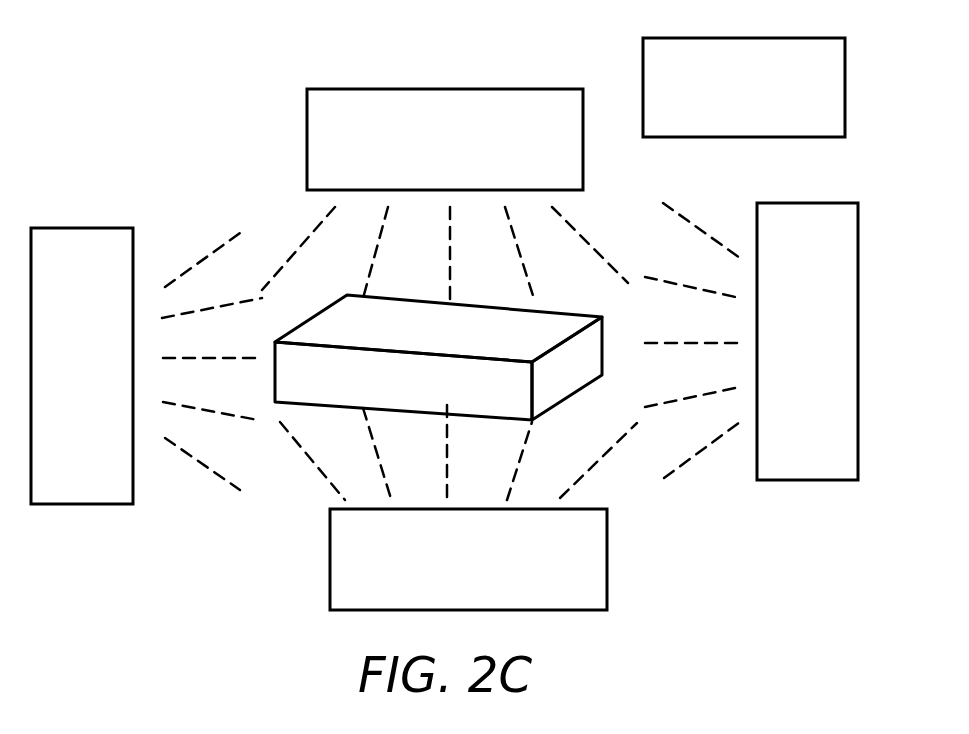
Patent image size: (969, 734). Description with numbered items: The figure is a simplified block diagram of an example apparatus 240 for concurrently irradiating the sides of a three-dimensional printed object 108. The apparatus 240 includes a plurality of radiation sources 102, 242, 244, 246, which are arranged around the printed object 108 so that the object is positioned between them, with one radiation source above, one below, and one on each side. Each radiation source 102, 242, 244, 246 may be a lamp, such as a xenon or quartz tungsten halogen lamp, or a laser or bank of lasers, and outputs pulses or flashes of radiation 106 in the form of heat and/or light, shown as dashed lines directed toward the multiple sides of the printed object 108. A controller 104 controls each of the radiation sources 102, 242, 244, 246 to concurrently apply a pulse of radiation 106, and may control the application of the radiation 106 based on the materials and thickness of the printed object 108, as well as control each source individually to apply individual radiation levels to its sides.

The apparatus 240 is at (468, 58).
The radiation source 244 is at (425, 152).
The controller 104 is at (723, 116).
The radiation source 242 is at (92, 343).
The radiation source 246 is at (798, 320).
The radiation source 102 is at (448, 570).
The radiation 106 is at (216, 186).
The 3D printed object 108 is at (275, 407).